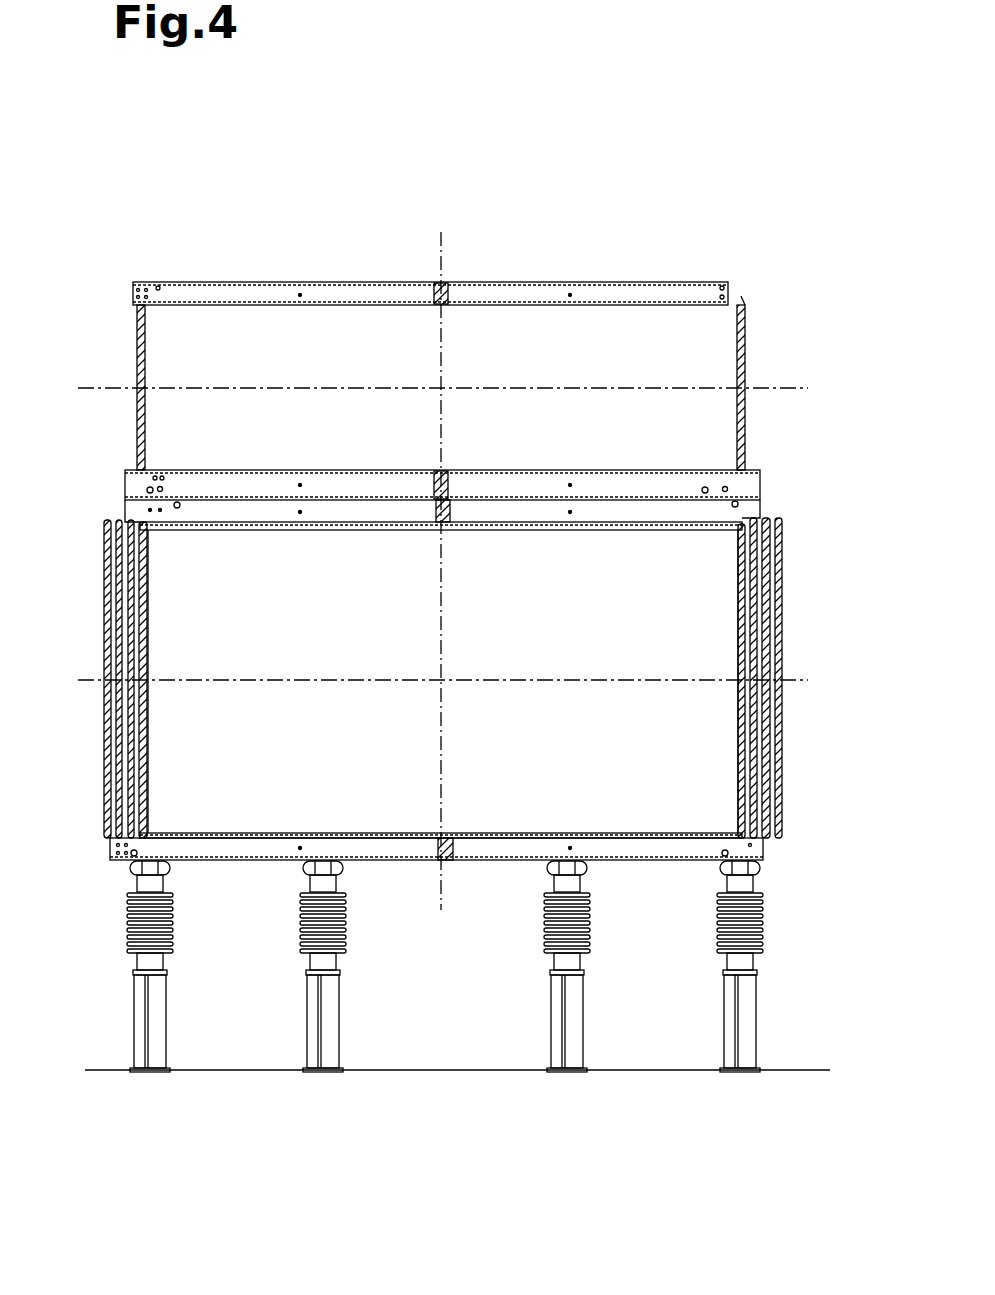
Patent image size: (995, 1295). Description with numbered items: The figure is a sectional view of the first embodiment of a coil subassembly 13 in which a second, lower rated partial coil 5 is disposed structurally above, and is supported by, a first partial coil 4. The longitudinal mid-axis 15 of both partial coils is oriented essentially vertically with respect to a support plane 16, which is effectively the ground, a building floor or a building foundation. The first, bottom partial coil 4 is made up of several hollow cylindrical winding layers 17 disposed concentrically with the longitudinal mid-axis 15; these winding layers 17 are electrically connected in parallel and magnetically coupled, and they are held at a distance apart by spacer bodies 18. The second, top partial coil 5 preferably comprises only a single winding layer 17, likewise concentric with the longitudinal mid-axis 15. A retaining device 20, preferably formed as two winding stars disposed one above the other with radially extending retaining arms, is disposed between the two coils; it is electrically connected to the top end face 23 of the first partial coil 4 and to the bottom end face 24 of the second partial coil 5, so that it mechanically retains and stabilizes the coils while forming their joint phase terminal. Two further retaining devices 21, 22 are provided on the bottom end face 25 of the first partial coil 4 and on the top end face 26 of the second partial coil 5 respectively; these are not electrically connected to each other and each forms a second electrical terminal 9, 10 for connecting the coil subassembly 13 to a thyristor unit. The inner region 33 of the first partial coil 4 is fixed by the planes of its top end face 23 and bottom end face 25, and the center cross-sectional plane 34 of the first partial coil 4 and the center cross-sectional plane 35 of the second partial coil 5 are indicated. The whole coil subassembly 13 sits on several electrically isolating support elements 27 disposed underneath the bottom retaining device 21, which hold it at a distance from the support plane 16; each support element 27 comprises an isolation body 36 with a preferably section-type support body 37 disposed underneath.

The first partial coil 4 is at (796, 660).
The second partial coil 5 is at (752, 378).
The second electrical terminal 9 is at (116, 880).
The second electrical terminal 10 is at (142, 262).
The coil subassembly 13 is at (694, 146).
The longitudinal mid-axis 15 is at (447, 250).
The support plane 16 is at (786, 1070).
The winding layer 17 is at (137, 335).
The spacer body 18 is at (107, 838).
The retaining device 20 is at (120, 496).
The retaining device 21 is at (427, 873).
The retaining device 22 is at (355, 252).
The top end face 23 is at (783, 520).
The bottom end face 24 is at (760, 474).
The bottom end face 25 is at (775, 840).
The top end face 26 is at (745, 306).
The support element 27 is at (296, 1022).
The inner region 33 is at (490, 815).
The center cross-sectional plane 34 is at (95, 674).
The center cross-sectional plane 35 is at (115, 395).
The isolation body 36 is at (300, 932).
The support body 37 is at (328, 1052).